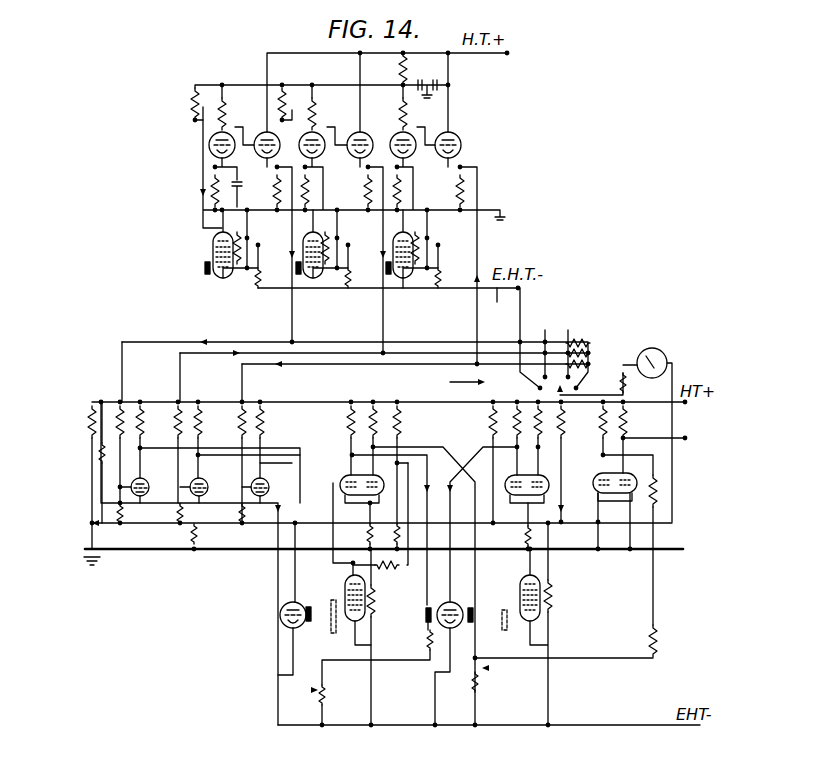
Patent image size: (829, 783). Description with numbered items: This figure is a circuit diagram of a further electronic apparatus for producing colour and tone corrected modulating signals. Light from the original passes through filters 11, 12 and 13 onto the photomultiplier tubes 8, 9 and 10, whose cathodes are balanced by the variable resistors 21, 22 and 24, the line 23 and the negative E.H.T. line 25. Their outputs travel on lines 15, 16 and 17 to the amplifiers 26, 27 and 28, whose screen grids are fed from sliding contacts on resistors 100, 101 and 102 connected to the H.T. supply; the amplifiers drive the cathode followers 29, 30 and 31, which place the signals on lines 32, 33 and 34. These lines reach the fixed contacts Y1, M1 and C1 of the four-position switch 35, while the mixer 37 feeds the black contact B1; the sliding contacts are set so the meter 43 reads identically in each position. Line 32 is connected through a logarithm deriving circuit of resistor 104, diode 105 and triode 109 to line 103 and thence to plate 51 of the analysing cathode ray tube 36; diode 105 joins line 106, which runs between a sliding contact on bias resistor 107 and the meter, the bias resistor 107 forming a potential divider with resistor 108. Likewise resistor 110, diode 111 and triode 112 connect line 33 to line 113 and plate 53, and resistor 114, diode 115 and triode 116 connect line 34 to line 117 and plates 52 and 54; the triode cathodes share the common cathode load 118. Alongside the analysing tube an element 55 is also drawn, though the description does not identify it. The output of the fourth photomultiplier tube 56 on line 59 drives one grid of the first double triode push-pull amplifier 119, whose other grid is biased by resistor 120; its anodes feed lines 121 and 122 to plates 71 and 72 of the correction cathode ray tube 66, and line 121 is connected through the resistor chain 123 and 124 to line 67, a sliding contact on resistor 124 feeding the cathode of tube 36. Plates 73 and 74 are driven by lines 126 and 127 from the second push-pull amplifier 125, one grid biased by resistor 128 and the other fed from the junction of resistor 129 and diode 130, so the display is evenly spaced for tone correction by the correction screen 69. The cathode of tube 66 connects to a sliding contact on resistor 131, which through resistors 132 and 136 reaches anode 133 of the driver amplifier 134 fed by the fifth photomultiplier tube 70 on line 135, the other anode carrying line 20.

The resistor 100 is at (193, 100).
The resistor 101 is at (285, 92).
The resistor 102 is at (400, 90).
The amplifier 26 is at (209, 145).
The cathode follower 29 is at (266, 130).
The amplifier 27 is at (318, 158).
The cathode follower 30 is at (358, 133).
The amplifier 28 is at (408, 156).
The cathode follower 31 is at (453, 132).
The line 15 is at (203, 216).
The line 16 is at (302, 219).
The line 17 is at (398, 218).
The photomultiplier tube 8 is at (211, 249).
The photomultiplier tube 9 is at (301, 249).
The photomultiplier tube 10 is at (391, 246).
The filter 11 is at (207, 276).
The filter 12 is at (298, 276).
The filter 13 is at (388, 276).
The variable resistor 21 is at (260, 270).
The variable resistor 22 is at (348, 271).
The variable resistor 24 is at (438, 269).
The line 23 is at (412, 296).
The line 25 is at (496, 310).
The line 32 is at (240, 342).
The line 33 is at (211, 353).
The line 34 is at (291, 364).
The four-position switch 35 is at (451, 384).
The fixed contact M1 is at (541, 323).
The fixed contact C1 is at (572, 323).
The fixed contact Y1 is at (538, 388).
The fixed contact B1 is at (578, 388).
The mixer 37 is at (590, 345).
The meter 43 is at (661, 350).
The resistor 108 is at (88, 424).
The resistor 104 is at (122, 422).
The resistor 110 is at (159, 453).
The resistor 114 is at (242, 423).
The resistor 116 is at (260, 470).
The line 103 is at (172, 444).
The line 113 is at (278, 559).
The amplifier triode valve 109 is at (146, 482).
The triode valve 112 is at (202, 482).
The diode 115 is at (237, 518).
The diode 111 is at (174, 518).
The diode 105 is at (112, 524).
The bias resistor 107 is at (85, 527).
The line 106 is at (688, 477).
The common cathode load 118 is at (198, 535).
The line 59 is at (335, 508).
The first double triode push-pull amplifier 119 is at (340, 470).
The line 121 is at (396, 440).
The line 122 is at (402, 457).
The resistor 120 is at (385, 504).
The resistor 128 is at (492, 460).
The line 126 is at (494, 456).
The line 127 is at (486, 506).
The second double triode push-pull amplifier 125 is at (543, 526).
The resistor 129 is at (562, 418).
The anode 133 is at (602, 442).
The driver amplifier double triode valve 134 is at (602, 455).
The diode 130 is at (593, 483).
The resistor 136 is at (658, 497).
The line 20 is at (680, 440).
The plate 53 is at (292, 605).
The line 117 is at (278, 582).
The plate 52 is at (280, 619).
The plate 54 is at (285, 625).
The analysing cathode ray tube 36 is at (288, 643).
The plate 51 is at (310, 614).
The electrode 55 is at (333, 633).
The fourth photomultiplier tube 56 is at (358, 648).
The resistor 124 is at (322, 698).
The plate 72 is at (464, 610).
The plate 73 is at (446, 605).
The plate 71 is at (426, 620).
The resistor 123 is at (428, 638).
The plate 74 is at (460, 631).
The correction cathode ray tube 66 is at (475, 662).
The correction screen 69 is at (508, 632).
The fifth photomultiplier tube 70 is at (537, 635).
The line 135 is at (566, 566).
The resistor 131 is at (484, 676).
The resistor 132 is at (661, 631).
The line 67 is at (583, 725).